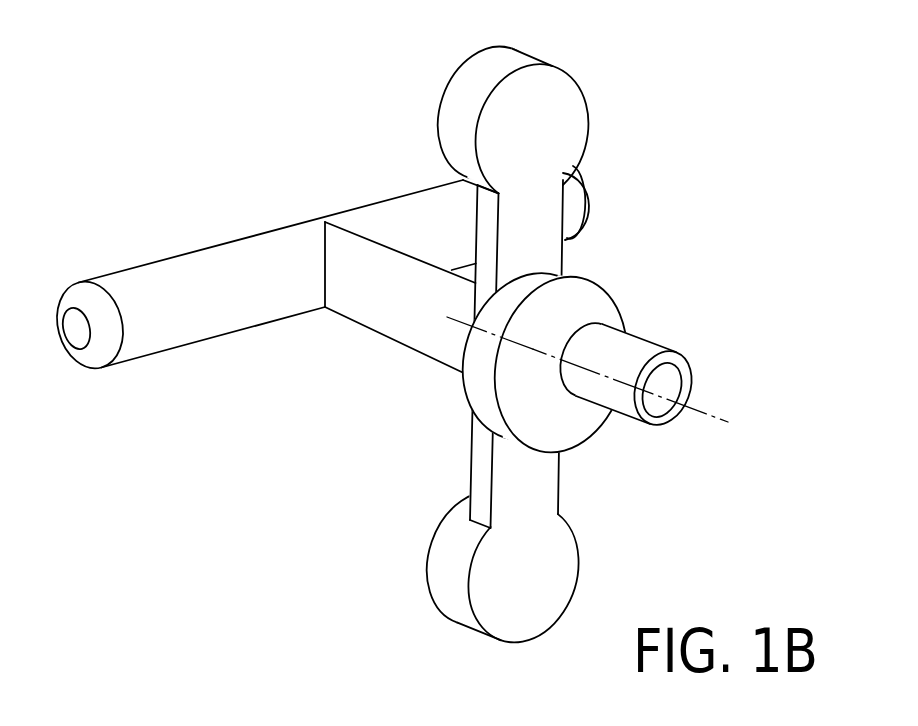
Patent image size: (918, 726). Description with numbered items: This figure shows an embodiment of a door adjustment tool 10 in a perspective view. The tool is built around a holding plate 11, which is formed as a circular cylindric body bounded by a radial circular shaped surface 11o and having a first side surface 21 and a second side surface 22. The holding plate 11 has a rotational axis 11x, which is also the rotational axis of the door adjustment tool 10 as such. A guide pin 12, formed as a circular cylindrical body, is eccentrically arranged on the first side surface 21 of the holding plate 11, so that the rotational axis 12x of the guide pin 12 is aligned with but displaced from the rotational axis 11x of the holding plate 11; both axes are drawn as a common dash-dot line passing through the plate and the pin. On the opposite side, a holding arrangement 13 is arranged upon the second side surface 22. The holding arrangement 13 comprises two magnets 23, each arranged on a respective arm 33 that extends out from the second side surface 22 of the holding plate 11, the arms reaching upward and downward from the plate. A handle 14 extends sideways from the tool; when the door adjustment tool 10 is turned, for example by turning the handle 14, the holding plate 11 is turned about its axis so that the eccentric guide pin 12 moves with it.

The door adjustment tool 10 is at (442, 337).
The holding plate 11 is at (526, 339).
The radial circular shaped surface 11o is at (542, 293).
The rotational axis of the holding plate 11x is at (533, 356).
The guide pin 12 is at (610, 357).
The rotational axis of the guide pin 12x is at (704, 412).
The holding arrangement 13 is at (532, 230).
The handle 14 is at (218, 292).
The first side surface 21 is at (565, 313).
The second side surface 22 is at (509, 339).
The magnet 23 is at (537, 130).
The arm 33 is at (548, 192).